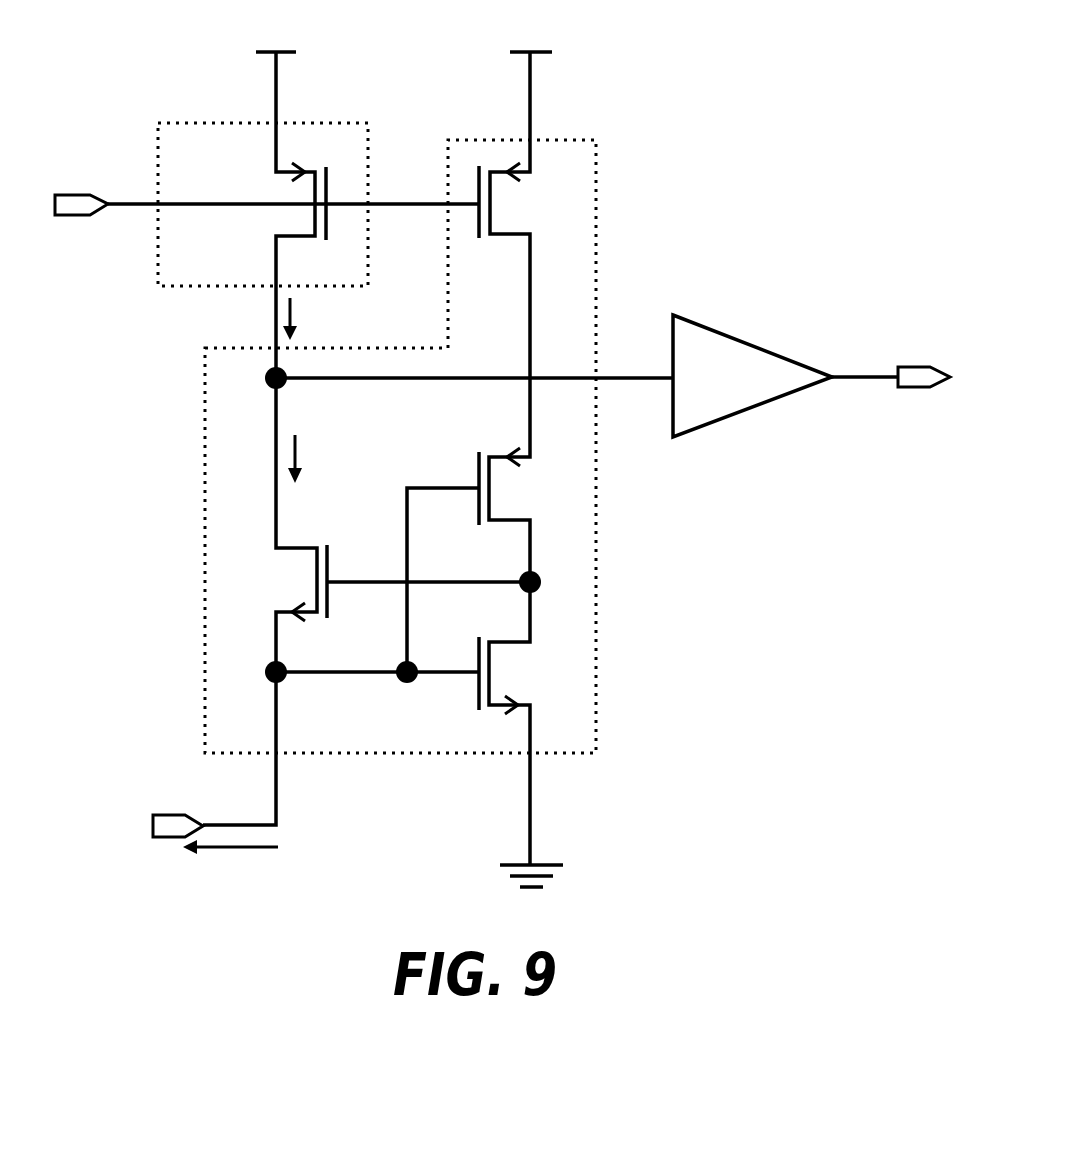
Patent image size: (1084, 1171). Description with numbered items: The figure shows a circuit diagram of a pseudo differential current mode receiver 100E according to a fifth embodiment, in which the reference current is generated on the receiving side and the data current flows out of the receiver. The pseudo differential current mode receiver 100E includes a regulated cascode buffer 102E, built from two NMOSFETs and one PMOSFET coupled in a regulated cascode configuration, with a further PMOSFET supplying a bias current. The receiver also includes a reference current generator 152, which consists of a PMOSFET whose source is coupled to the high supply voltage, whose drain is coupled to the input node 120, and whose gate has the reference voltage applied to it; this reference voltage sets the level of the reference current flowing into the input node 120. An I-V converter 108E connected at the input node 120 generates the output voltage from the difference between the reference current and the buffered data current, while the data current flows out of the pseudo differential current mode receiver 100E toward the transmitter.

The pseudo differential current mode receiver 100E is at (857, 134).
The regulated cascode buffer 102E is at (205, 586).
The I-V converter 108E is at (755, 312).
The input node 120 is at (289, 382).
The reference current generator 152 is at (216, 124).